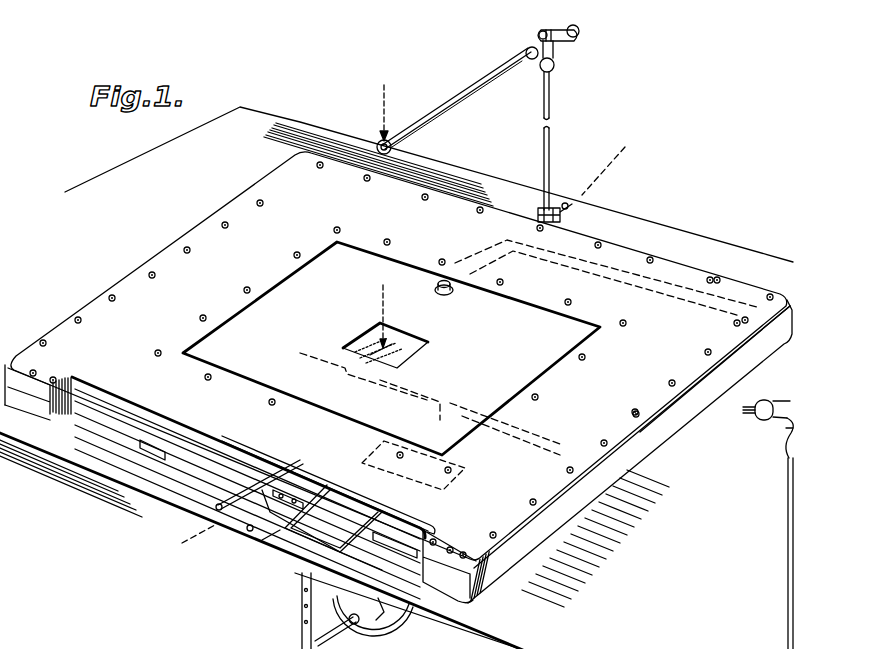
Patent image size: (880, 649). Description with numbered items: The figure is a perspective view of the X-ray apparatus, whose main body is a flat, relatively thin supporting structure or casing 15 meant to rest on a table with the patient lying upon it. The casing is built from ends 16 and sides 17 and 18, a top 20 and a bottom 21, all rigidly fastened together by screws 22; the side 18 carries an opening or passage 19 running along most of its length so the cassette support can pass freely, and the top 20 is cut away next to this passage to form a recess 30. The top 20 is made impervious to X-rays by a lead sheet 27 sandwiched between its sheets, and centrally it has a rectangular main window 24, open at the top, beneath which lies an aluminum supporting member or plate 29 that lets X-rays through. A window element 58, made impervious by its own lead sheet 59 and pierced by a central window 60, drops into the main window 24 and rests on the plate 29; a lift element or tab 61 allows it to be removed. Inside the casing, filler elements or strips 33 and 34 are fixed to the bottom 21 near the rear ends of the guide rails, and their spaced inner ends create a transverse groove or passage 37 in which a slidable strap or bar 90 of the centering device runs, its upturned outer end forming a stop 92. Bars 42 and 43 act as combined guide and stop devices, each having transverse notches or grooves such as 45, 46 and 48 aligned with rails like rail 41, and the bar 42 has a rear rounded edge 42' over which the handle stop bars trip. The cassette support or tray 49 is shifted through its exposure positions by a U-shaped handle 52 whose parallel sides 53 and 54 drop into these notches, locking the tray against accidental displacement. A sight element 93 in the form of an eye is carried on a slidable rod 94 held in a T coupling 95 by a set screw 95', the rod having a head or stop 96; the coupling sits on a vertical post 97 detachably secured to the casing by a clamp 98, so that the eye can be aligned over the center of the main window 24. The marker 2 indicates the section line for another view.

The section line 2 is at (658, 127).
The supporting structure or casing 15 is at (622, 484).
The ends 16 is at (195, 238).
The side 17 is at (688, 262).
The side 18 is at (35, 400).
The opening or passage 19 is at (72, 420).
The top 20 is at (141, 286).
The bottom 21 is at (104, 474).
The screws 22 is at (44, 340).
The main window 24 is at (536, 380).
The lead sheet 27 is at (621, 447).
The supporting member or plate 29 is at (395, 356).
The recess 30 is at (137, 402).
The filler element or strip 33 is at (472, 533).
The filler element or strip 34 is at (187, 438).
The groove or passage 37 is at (249, 532).
The rail 41 is at (132, 453).
The bar 42 is at (292, 474).
The rear rounded edge 42' is at (408, 466).
The bar 43 is at (87, 408).
The transverse notch or groove 45 is at (312, 487).
The transverse notch or groove 46 is at (291, 478).
The transverse notch or groove 48 is at (173, 470).
The cassette support or tray 49 is at (205, 480).
The handle 52 is at (300, 566).
The side or bar 53 is at (300, 589).
The side or bar 54 is at (270, 545).
The window element 58 is at (494, 395).
The lead sheet 59 is at (413, 337).
The window 60 is at (368, 341).
The lift element or tab 61 is at (450, 292).
The slidable strap or bar 90 is at (264, 470).
The stop 92 is at (220, 512).
The sight element 93 is at (371, 119).
The slidable rod 94 is at (490, 78).
The T coupling 95 is at (660, 243).
The set screw 95' is at (530, 25).
The head or stop 96 is at (579, 31).
The vertical post 97 is at (550, 152).
The clamp 98 is at (572, 212).